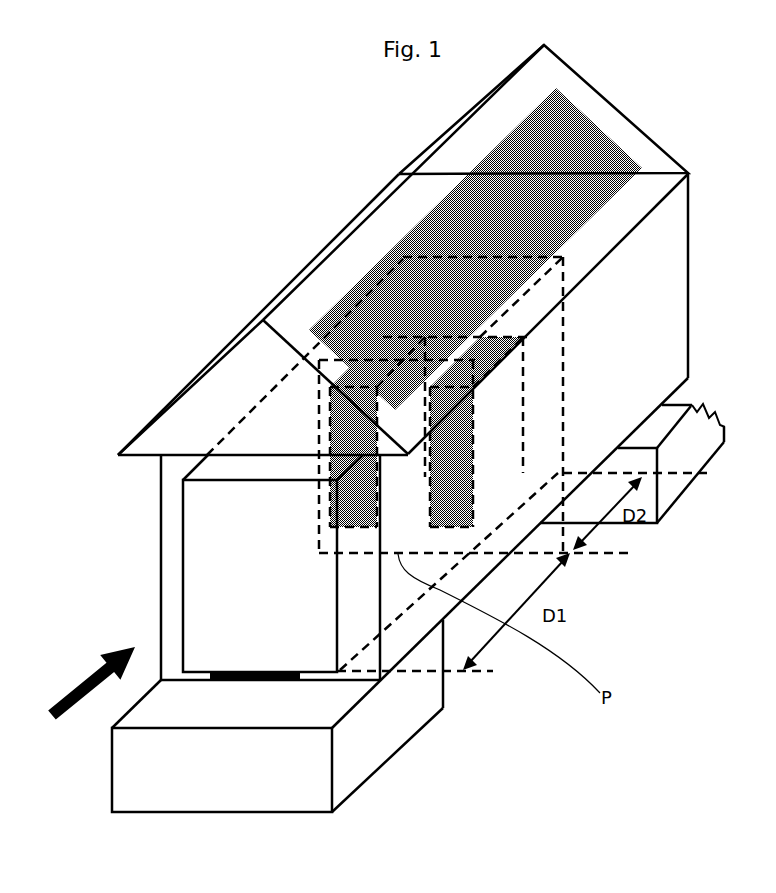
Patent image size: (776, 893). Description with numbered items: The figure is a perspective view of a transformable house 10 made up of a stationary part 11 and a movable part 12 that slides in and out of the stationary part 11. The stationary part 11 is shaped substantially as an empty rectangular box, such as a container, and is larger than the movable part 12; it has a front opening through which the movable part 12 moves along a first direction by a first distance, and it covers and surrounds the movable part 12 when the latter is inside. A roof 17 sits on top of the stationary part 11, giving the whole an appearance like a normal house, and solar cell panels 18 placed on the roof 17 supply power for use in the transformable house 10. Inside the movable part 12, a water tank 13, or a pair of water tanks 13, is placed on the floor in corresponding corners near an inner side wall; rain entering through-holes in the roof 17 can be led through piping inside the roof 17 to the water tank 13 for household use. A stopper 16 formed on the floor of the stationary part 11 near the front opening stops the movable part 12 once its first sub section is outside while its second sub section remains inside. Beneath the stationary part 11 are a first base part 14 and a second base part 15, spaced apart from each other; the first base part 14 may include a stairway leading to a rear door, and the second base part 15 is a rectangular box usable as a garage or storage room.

The transformable house 10 is at (282, 118).
The stationary part 11 is at (161, 603).
The movable part 12 is at (226, 584).
The water tank 13 is at (457, 450).
The first base part 14 is at (668, 487).
The second base part 15 is at (303, 748).
The stopper 16 is at (283, 682).
The roof 17 is at (281, 308).
The solar cell panels 18 is at (428, 236).